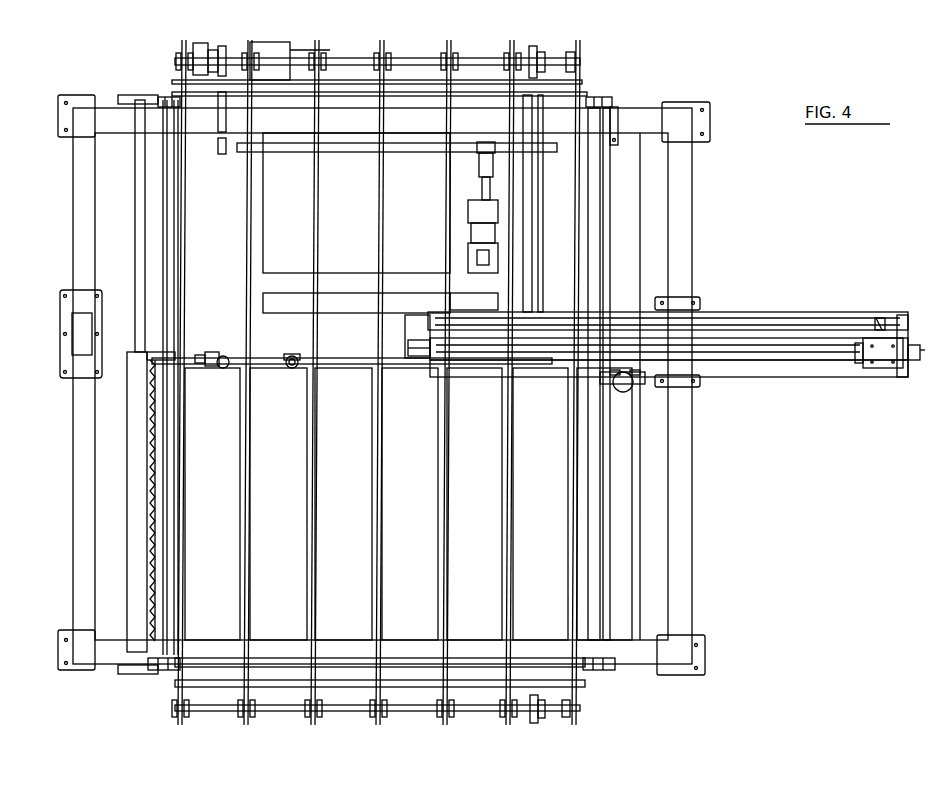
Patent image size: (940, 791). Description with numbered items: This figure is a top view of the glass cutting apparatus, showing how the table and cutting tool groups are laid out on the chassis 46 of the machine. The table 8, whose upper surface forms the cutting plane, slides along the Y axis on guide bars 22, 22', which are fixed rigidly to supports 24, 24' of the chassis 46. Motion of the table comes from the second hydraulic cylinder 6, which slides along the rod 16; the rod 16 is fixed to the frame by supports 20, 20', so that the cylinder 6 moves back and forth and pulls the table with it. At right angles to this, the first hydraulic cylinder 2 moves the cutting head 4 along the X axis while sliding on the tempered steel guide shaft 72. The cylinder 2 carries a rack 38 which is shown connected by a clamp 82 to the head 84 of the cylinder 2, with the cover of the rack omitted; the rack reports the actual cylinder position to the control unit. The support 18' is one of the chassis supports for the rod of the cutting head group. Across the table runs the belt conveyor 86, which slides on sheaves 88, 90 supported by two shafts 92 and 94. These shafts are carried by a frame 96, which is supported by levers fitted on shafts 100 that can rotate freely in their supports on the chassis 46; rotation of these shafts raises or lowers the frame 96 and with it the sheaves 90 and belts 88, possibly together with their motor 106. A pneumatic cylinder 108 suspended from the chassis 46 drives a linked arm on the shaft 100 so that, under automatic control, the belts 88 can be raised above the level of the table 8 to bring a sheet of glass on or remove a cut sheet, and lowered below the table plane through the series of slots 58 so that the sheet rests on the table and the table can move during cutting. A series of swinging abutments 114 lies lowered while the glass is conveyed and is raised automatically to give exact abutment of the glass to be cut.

The first hydraulic cylinder 2 is at (783, 357).
The cutting head 4 is at (622, 390).
The second hydraulic cylinder 6 is at (128, 578).
The table 8 is at (620, 540).
The rod 16 is at (140, 258).
The support 18' is at (917, 329).
The support 20 is at (128, 81).
The support 20' is at (123, 693).
The guide bar 22 is at (134, 226).
The guide bar 22' is at (626, 373).
The support 24 is at (389, 690).
The support 24' is at (390, 82).
The rack 38 is at (758, 325).
The chassis 46 is at (357, 123).
The slots 58 is at (310, 530).
The guide shaft 72 is at (416, 357).
The clamp 82 is at (880, 320).
The head of cylinder 84 is at (880, 360).
The belt conveyor 86 is at (502, 540).
The sheaves 88 is at (445, 718).
The sheaves 90 is at (515, 47).
The shaft 92 is at (285, 710).
The shaft 94 is at (412, 58).
The frame 96 is at (425, 153).
The shaft 100 is at (290, 152).
The motor 106 is at (280, 50).
The pneumatic cylinder 108 is at (482, 236).
The abutments 114 is at (223, 355).